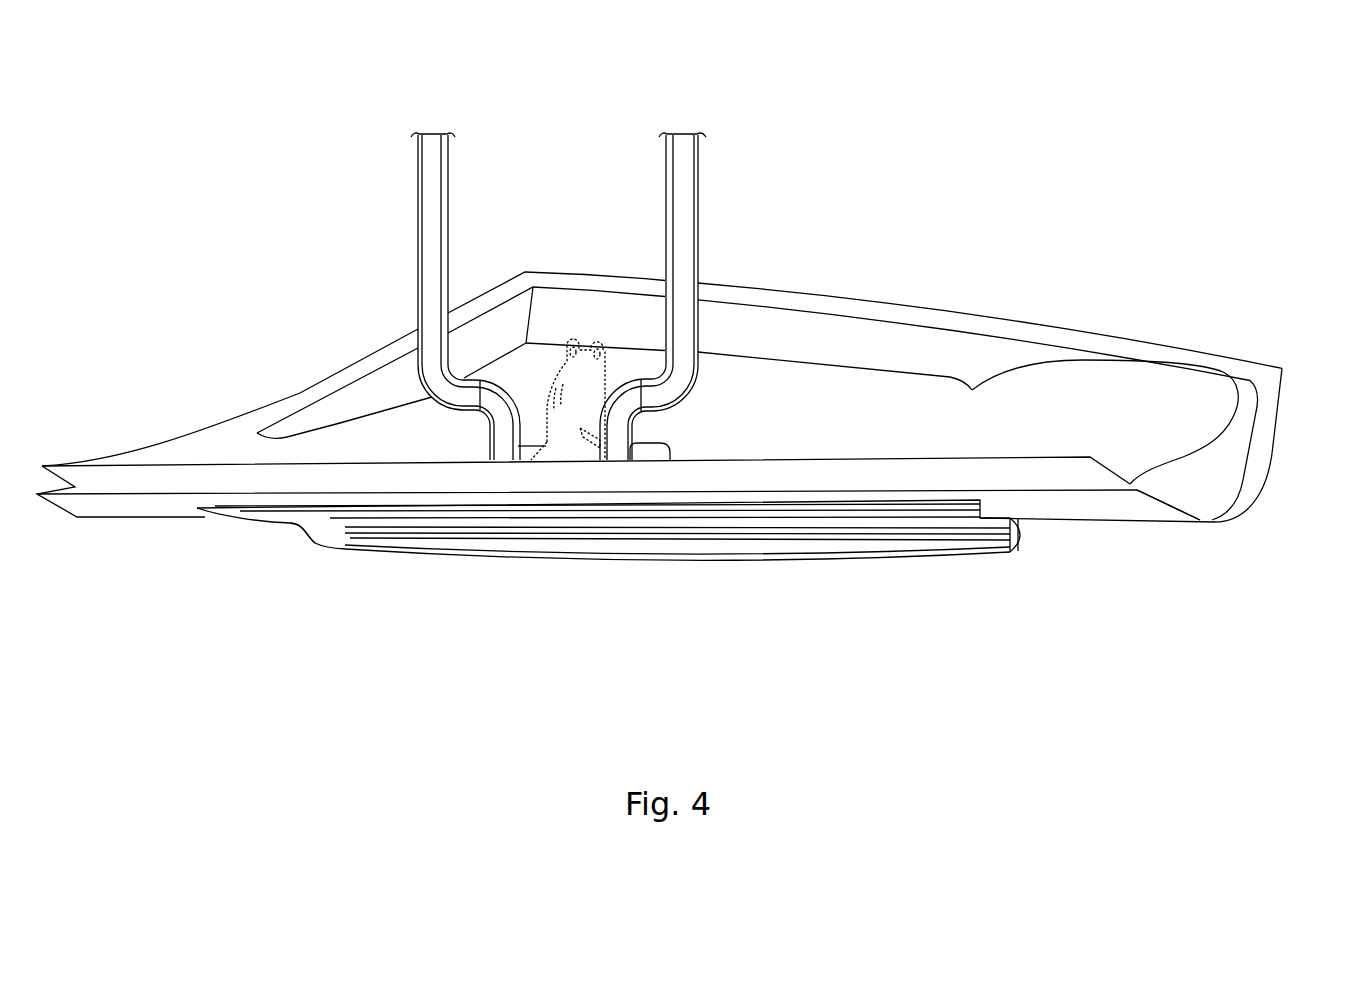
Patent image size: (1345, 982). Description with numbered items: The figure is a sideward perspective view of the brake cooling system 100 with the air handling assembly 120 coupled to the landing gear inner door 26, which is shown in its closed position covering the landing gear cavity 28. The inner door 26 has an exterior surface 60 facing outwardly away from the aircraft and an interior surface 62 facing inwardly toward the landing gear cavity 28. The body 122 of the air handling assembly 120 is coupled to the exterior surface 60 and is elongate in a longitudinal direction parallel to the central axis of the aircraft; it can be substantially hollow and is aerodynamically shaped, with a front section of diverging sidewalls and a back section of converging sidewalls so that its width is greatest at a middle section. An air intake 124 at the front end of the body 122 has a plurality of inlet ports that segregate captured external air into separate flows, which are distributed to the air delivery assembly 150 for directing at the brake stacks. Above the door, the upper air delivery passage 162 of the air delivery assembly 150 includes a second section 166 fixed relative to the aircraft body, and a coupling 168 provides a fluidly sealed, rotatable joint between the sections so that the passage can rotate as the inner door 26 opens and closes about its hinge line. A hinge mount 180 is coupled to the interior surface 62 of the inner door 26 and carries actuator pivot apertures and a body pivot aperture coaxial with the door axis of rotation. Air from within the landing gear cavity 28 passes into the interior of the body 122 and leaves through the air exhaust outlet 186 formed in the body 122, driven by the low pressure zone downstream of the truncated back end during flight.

The brake cooling system 100 is at (863, 133).
The landing gear cavity 28 is at (888, 284).
The inner door 26 is at (1220, 478).
The exterior surface 60 is at (1130, 523).
The interior surface 62 is at (1183, 378).
The upper air delivery passage 162 is at (420, 238).
The second section 166 is at (700, 211).
The coupling 168 is at (635, 380).
The hinge mount 180 is at (553, 372).
The air delivery assembly 150 is at (700, 423).
The air handling assembly 120 is at (733, 560).
The body 122 is at (815, 520).
The air intake 124 is at (1028, 538).
The air exhaust outlet 186 is at (303, 535).